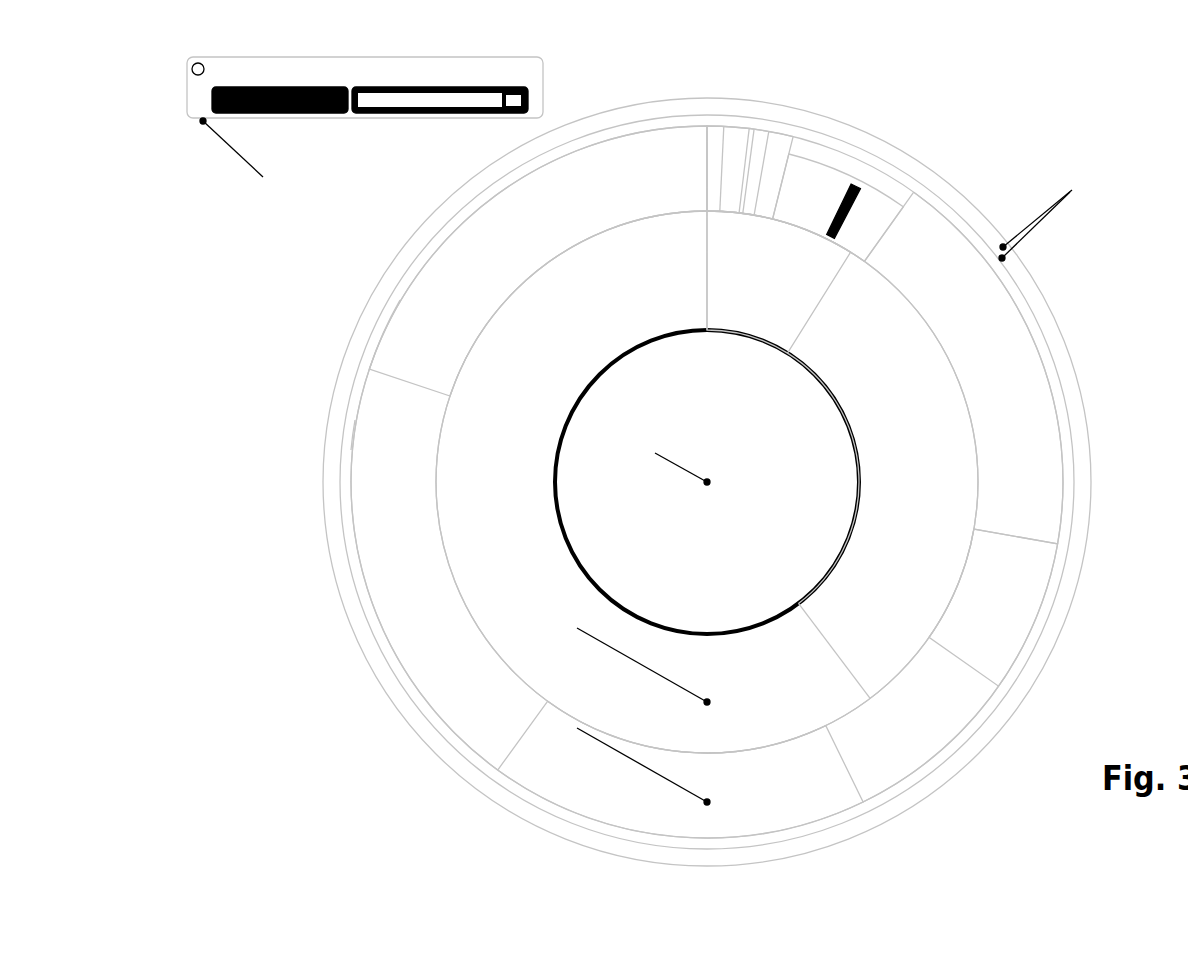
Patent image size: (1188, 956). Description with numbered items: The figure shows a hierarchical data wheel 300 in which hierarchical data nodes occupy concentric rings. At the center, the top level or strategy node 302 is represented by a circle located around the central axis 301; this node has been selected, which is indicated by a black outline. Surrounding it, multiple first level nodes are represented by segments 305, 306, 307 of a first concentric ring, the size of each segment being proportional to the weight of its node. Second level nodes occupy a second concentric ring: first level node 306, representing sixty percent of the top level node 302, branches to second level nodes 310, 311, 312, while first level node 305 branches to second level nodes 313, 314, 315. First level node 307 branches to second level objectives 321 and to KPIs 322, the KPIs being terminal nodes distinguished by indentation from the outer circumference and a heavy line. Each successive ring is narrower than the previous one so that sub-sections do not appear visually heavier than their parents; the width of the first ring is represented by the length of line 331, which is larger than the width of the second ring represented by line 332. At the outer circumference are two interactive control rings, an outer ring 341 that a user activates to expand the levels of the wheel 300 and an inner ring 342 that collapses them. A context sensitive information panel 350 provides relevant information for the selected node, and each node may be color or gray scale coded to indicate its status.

The hierarchical data wheel 300 is at (955, 127).
The central axis 301 is at (707, 482).
The top level node 302 is at (773, 560).
The first level node segment 305 is at (902, 443).
The first level node segment 306 is at (778, 675).
The first level node segment 307 is at (748, 236).
The second level node segment 310 is at (420, 312).
The second level node segment 311 is at (405, 567).
The second level node segment 312 is at (587, 790).
The second level node segment 313 is at (935, 737).
The second level node segment 314 is at (1020, 583).
The second level node segment 315 is at (1012, 440).
The second level objectives 321 is at (737, 131).
The KPIs 322 is at (820, 180).
The line representing first ring width 331 is at (706, 272).
The line representing second ring width 332 is at (706, 172).
The outer control ring 341 is at (347, 350).
The inner control ring 342 is at (337, 457).
The context sensitive information panel 350 is at (212, 78).